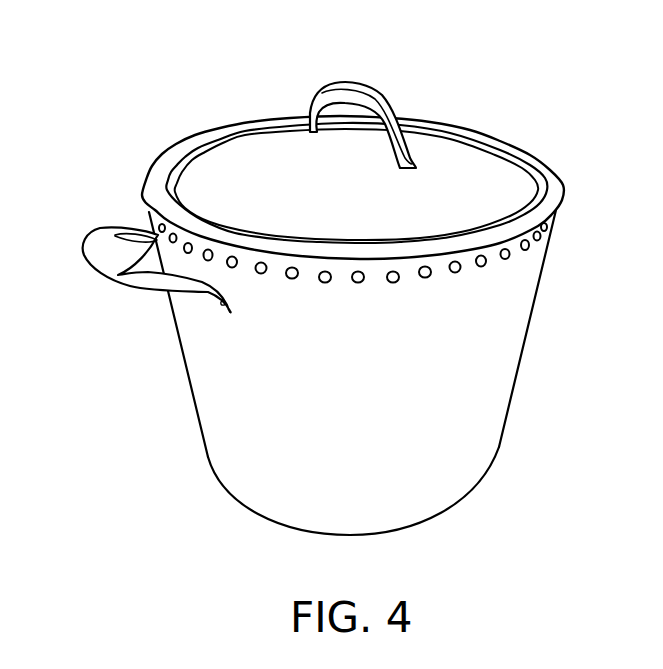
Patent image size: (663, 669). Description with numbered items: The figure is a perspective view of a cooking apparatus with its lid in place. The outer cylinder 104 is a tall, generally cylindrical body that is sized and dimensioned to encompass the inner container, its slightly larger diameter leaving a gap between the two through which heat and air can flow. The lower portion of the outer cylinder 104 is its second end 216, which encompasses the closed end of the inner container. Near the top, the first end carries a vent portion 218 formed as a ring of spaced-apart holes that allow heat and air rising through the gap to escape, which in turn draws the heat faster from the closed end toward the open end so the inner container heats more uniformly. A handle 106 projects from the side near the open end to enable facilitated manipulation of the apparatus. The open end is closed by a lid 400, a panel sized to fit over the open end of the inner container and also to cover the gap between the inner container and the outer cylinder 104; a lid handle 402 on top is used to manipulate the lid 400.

The outer cylinder 104 is at (510, 348).
The handle 106 is at (98, 242).
The second end 216 is at (452, 508).
The vent portion 218 is at (432, 275).
The lid 400 is at (482, 175).
The lid handle 402 is at (350, 80).